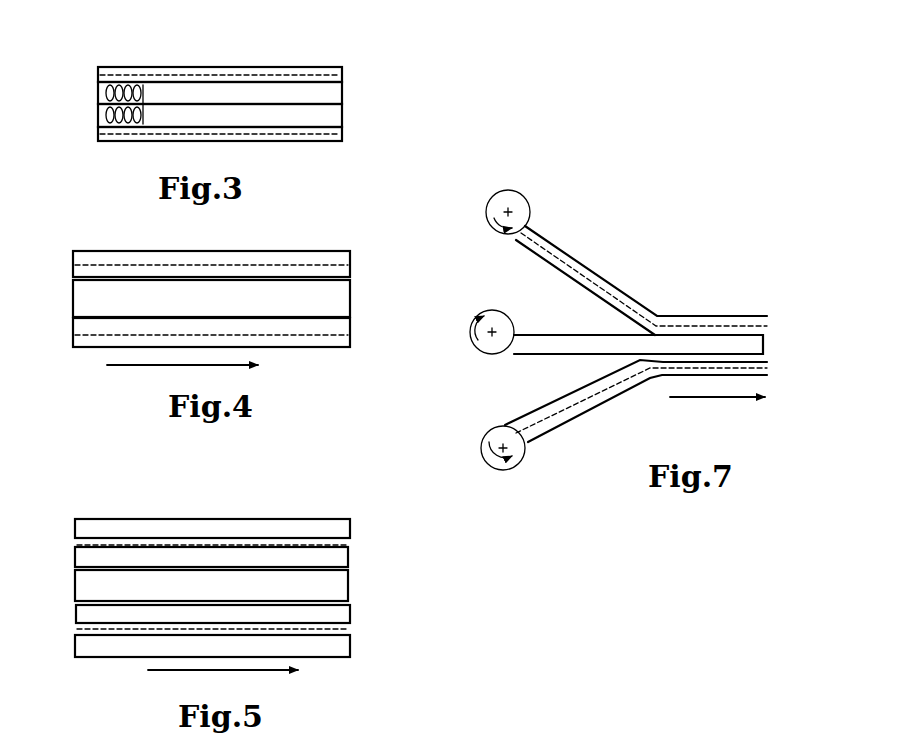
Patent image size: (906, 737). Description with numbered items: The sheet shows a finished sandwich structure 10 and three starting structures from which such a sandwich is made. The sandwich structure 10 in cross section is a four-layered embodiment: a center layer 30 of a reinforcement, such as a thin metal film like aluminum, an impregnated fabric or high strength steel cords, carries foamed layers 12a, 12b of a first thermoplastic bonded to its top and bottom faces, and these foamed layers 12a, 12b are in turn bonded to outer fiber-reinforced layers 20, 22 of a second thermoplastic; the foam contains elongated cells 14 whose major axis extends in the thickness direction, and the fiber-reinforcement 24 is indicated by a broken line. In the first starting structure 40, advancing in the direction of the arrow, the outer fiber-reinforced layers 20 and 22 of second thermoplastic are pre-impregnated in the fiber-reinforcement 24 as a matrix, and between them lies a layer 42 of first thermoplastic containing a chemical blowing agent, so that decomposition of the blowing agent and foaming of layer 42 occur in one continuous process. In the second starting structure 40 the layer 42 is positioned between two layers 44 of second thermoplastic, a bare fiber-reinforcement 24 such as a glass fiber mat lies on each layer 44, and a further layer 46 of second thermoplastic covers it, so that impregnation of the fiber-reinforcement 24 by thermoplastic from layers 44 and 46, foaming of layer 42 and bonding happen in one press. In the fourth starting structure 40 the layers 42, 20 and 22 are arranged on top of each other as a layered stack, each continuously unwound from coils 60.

In FIG. 3, the sandwich structure 10 is at (305, 43).
In FIG. 3, the foamed layer of first thermoplastic 12a is at (335, 97).
In FIG. 3, the foamed layer of first thermoplastic 12b is at (340, 115).
In FIG. 3, the elongated cells 14 is at (106, 115).
In FIG. 3, the outer fiber-reinforced layer 20 is at (342, 68).
In FIG. 4, the outer fiber-reinforced layer 20 is at (350, 266).
In FIG. 7, the outer fiber-reinforced layer 20 is at (615, 285).
In FIG. 3, the outer fiber-reinforced layer 22 is at (345, 142).
In FIG. 4, the outer fiber-reinforced layer 22 is at (352, 335).
In FIG. 7, the outer fiber-reinforced layer 22 is at (608, 395).
In FIG. 3, the fiber-reinforcement 24 is at (175, 72).
In FIG. 5, the fiber-reinforcement 24 is at (340, 547).
In FIG. 3, the center layer of reinforcement 30 is at (212, 100).
In FIG. 4, the starting structure 40 is at (320, 236).
In FIG. 5, the starting structure 40 is at (105, 496).
In FIG. 7, the starting structure 40 is at (772, 375).
In FIG. 4, the layer of first thermoplastic containing a chemical blowing agent 42 is at (90, 300).
In FIG. 5, the layer of first thermoplastic containing a chemical blowing agent 42 is at (85, 587).
In FIG. 7, the layer of first thermoplastic containing a chemical blowing agent 42 is at (555, 335).
In FIG. 5, the layer of second thermoplastic 44 is at (345, 613).
In FIG. 5, the further layer of second thermoplastic 46 is at (330, 530).
In FIG. 7, the coil 60 is at (527, 200).